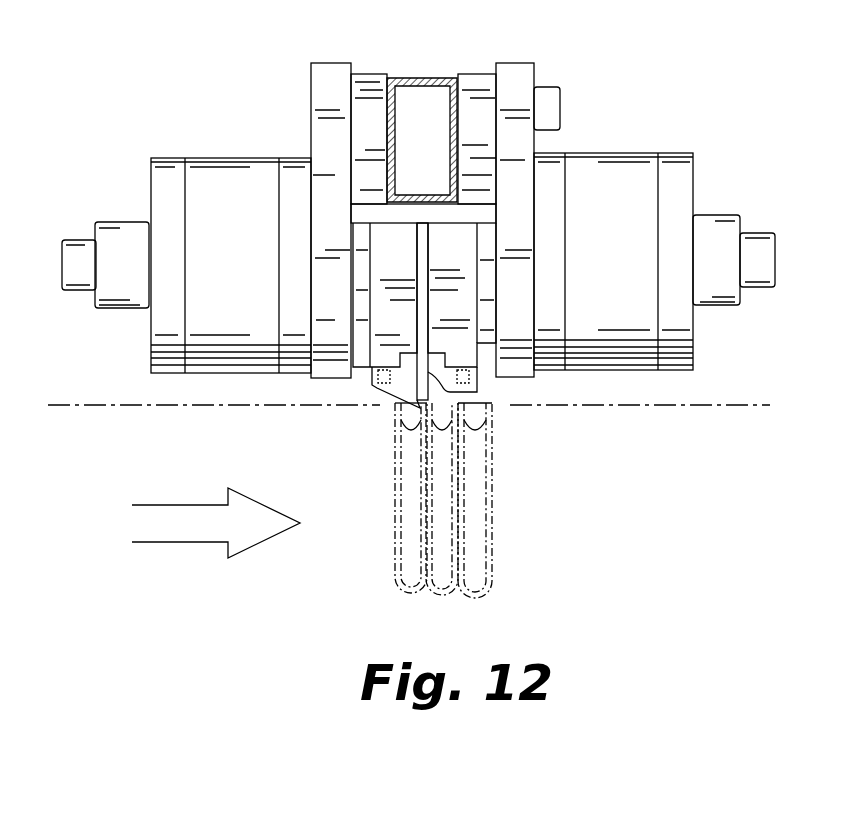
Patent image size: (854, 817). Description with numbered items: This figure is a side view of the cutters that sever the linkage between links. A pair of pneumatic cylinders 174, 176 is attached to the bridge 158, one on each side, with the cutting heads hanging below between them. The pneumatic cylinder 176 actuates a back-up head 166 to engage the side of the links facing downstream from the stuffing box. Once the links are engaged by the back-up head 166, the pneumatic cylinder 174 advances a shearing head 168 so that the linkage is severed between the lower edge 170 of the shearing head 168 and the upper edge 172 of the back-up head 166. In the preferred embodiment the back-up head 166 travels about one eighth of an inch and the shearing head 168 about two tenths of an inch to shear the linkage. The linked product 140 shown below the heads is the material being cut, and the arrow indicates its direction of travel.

The tubes 140 is at (477, 453).
The bridge 158 is at (427, 78).
The back-up head 166 is at (445, 400).
The shearing head 168 is at (388, 396).
The lower edge of the shearing head 170 is at (410, 410).
The upper edge of the back-up head 172 is at (480, 420).
The pneumatic cylinder 174 is at (202, 158).
The pneumatic cylinder 176 is at (620, 152).